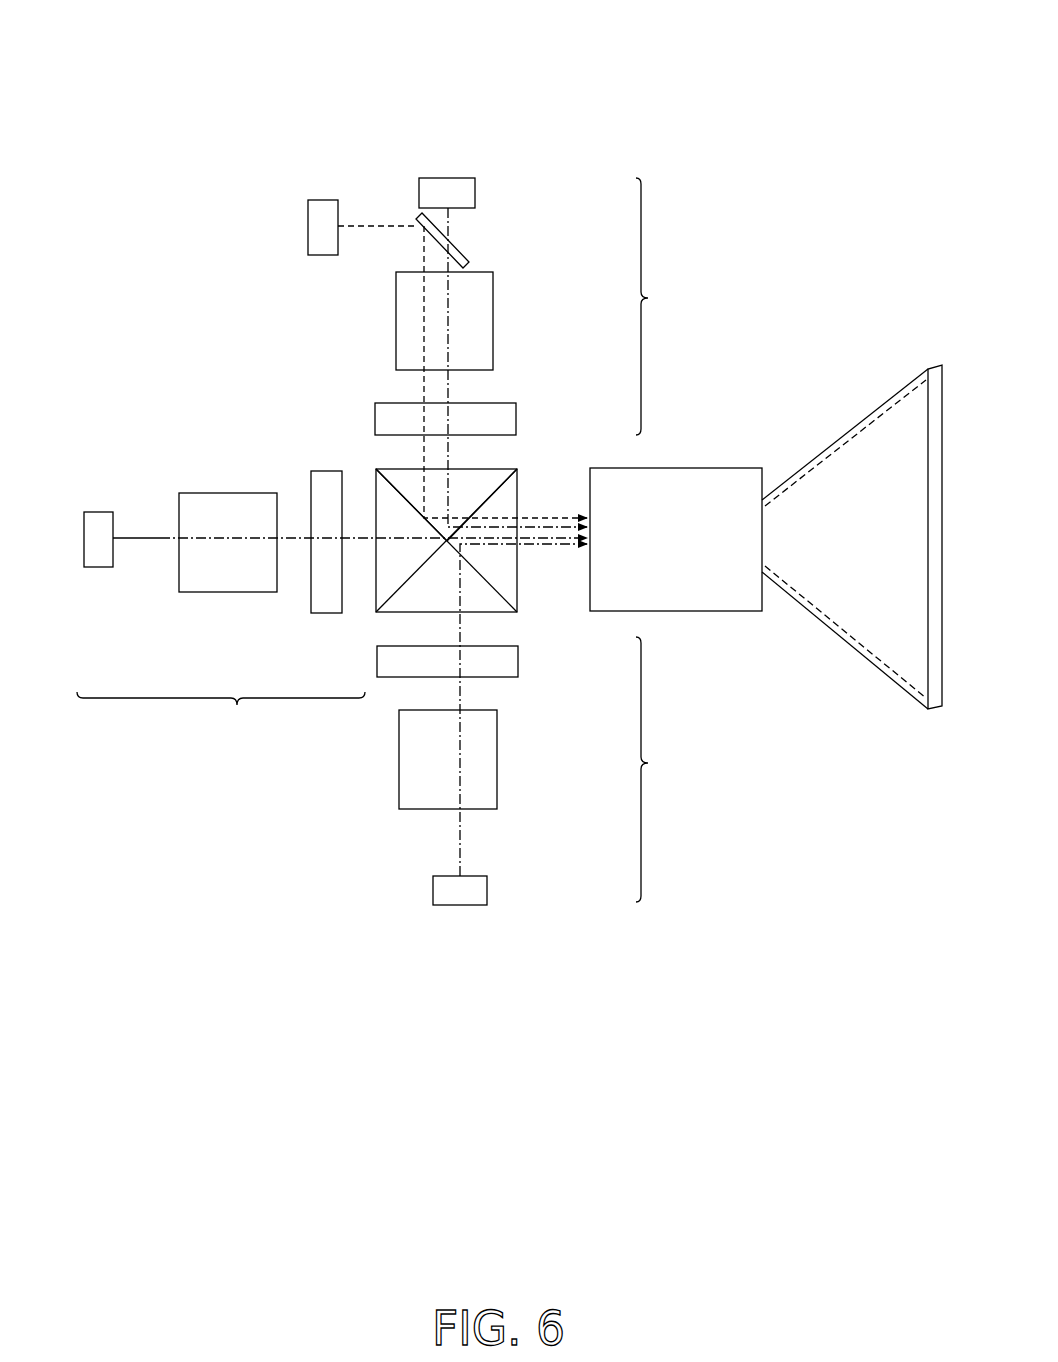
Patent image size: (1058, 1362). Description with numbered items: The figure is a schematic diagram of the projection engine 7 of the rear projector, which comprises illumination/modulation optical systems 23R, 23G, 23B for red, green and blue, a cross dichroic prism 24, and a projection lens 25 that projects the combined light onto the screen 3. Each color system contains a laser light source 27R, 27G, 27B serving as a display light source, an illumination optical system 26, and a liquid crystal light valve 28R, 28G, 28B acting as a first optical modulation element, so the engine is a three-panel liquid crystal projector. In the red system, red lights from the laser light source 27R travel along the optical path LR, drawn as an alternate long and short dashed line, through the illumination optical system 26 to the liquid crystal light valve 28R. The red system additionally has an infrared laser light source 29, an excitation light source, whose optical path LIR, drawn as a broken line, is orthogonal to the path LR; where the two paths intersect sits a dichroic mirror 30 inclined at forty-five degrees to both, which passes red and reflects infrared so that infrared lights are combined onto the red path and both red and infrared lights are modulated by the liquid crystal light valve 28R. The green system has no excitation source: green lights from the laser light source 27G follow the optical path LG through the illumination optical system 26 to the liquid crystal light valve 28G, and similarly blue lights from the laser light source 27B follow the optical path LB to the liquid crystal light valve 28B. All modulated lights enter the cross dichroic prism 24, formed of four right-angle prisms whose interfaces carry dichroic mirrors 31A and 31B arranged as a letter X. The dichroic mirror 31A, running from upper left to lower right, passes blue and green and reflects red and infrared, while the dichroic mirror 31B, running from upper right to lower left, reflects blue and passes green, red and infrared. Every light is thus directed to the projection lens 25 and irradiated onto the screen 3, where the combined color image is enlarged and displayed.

The projection engine 7 is at (467, 115).
The screen 3 is at (935, 367).
The projection lens 25 is at (700, 482).
The cross dichroic prism 24 is at (507, 563).
The dichroic mirror 31A is at (393, 490).
The dichroic mirror 31B is at (503, 487).
The illumination/modulation optical system for red 23R is at (669, 306).
The illumination/modulation optical system for green 23G is at (221, 717).
The illumination/modulation optical system for blue 23B is at (669, 769).
The laser light source for red 27R is at (476, 192).
The laser light source for green 27G is at (100, 562).
The laser light source for blue 27B is at (487, 888).
The illumination optical system 26 is at (487, 322).
The liquid crystal light valve for red 28R is at (514, 418).
The liquid crystal light valve for green 28G is at (327, 605).
The liquid crystal light valve for blue 28B is at (513, 660).
The infrared laser light source 29 is at (325, 207).
The dichroic mirror 30 is at (466, 244).
The optical path for lights of red LR is at (450, 224).
The optical path for lights of green LG is at (147, 535).
The optical path for lights of blue LB is at (462, 832).
The optical path for infrared lights LIR is at (383, 222).